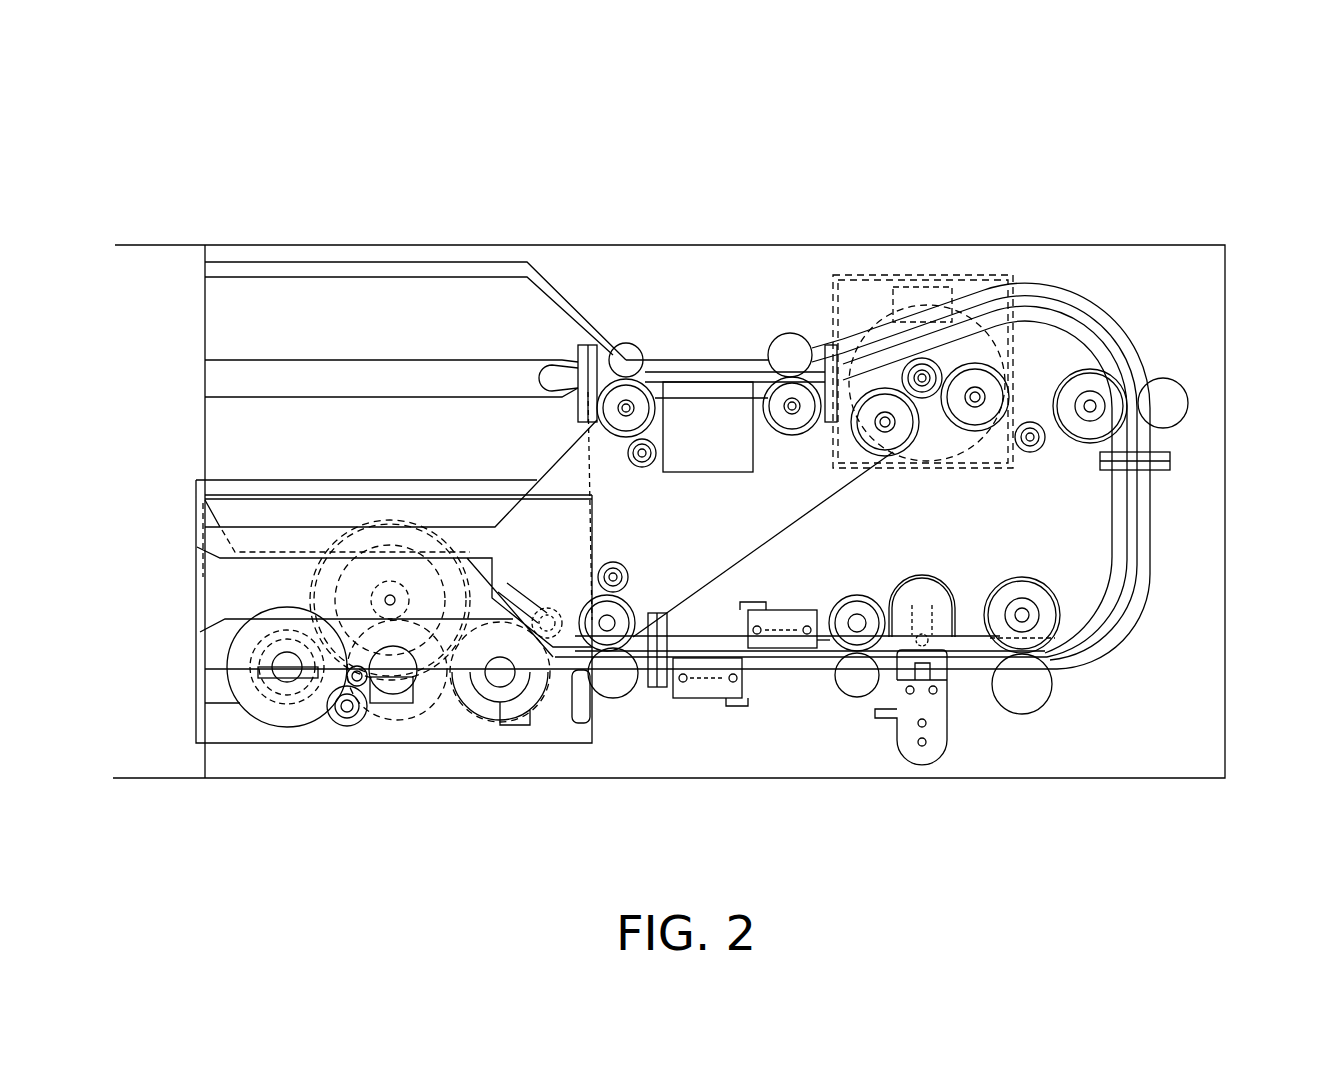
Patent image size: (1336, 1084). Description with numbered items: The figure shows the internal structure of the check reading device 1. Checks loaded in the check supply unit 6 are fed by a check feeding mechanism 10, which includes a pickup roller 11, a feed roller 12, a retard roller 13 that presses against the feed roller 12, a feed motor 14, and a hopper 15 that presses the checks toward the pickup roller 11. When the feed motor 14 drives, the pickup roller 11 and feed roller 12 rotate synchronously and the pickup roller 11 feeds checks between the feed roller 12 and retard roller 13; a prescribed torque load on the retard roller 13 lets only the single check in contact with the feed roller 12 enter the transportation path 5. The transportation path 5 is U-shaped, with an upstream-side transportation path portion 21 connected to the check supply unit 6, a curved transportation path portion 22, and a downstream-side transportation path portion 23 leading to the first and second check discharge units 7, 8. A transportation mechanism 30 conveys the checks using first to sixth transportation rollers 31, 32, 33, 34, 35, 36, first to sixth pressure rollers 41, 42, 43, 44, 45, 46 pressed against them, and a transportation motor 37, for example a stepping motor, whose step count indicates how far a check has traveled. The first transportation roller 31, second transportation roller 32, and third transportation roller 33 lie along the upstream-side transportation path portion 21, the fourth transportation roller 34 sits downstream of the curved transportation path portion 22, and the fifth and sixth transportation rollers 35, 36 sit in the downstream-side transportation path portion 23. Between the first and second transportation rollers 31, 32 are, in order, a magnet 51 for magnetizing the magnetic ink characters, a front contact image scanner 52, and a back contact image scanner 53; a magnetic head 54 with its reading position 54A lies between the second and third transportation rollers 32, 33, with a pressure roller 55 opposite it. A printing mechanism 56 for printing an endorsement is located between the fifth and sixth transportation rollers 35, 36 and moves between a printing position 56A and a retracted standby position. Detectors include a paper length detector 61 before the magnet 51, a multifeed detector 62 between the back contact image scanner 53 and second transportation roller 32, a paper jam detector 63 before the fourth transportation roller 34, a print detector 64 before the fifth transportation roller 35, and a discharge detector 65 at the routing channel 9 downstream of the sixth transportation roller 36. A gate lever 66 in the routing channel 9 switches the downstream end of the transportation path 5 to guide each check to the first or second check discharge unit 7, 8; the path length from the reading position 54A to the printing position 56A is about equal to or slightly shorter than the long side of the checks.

The check reading device 1 is at (1165, 212).
The transportation path 5 is at (1150, 536).
The check supply unit 6 is at (242, 577).
The first check discharge unit 7 is at (281, 318).
The second check discharge unit 8 is at (263, 440).
The routing channel 9 is at (626, 343).
The check feeding mechanism 10 is at (335, 738).
The pickup roller 11 is at (262, 690).
The feed roller 12 is at (472, 695).
The retard roller 13 is at (547, 605).
The feed motor 14 is at (460, 556).
The hopper 15 is at (252, 493).
The upstream-side transportation path portion 21 is at (762, 665).
The curved transportation path portion 22 is at (1150, 497).
The downstream-side transportation path portion 23 is at (902, 301).
The transportation mechanism 30 is at (930, 292).
The first transportation roller 31 is at (630, 603).
The second transportation roller 32 is at (860, 594).
The third transportation roller 33 is at (1028, 602).
The fourth transportation roller 34 is at (1080, 420).
The fifth transportation roller 35 is at (777, 436).
The sixth transportation roller 36 is at (624, 438).
The transportation motor 37 is at (980, 305).
The first pressure roller 41 is at (600, 690).
The second pressure roller 42 is at (855, 688).
The third pressure roller 43 is at (1032, 688).
The fourth pressure roller 44 is at (1188, 405).
The fifth pressure roller 45 is at (792, 333).
The sixth pressure roller 46 is at (640, 352).
The magnet 51 is at (675, 634).
The front contact image scanner 52 is at (712, 684).
The back contact image scanner 53 is at (802, 607).
The magnetic head 54 is at (948, 688).
The reading position 54A is at (946, 643).
The pressure roller 55 is at (930, 577).
The printing mechanism 56 is at (708, 440).
The printing position 56A is at (697, 366).
The paper length detector 61 is at (656, 690).
The multifeed detector 62 is at (820, 642).
The paper jam detector 63 is at (1172, 461).
The print detector 64 is at (865, 338).
The discharge detector 65 is at (584, 345).
The gate lever 66 is at (557, 364).